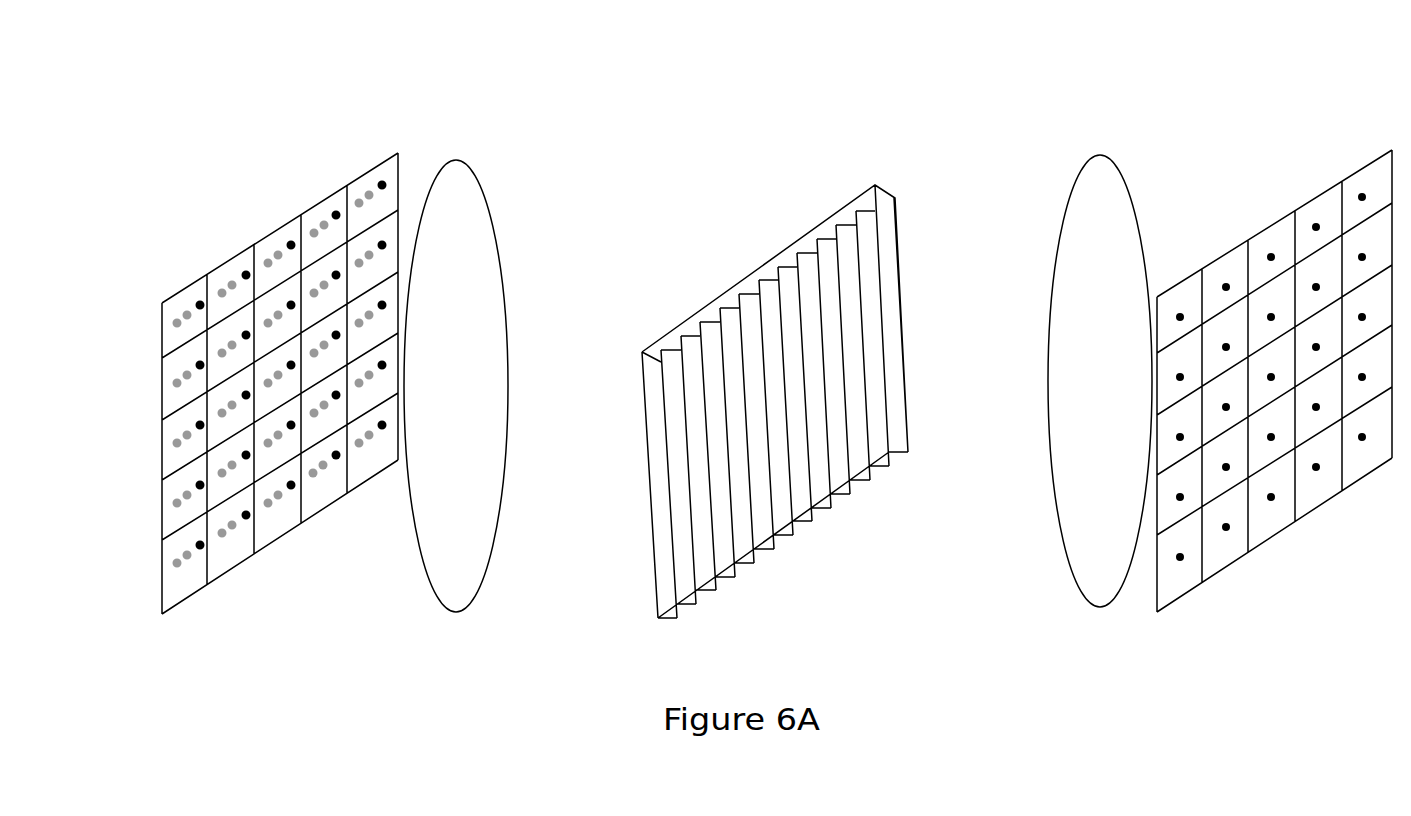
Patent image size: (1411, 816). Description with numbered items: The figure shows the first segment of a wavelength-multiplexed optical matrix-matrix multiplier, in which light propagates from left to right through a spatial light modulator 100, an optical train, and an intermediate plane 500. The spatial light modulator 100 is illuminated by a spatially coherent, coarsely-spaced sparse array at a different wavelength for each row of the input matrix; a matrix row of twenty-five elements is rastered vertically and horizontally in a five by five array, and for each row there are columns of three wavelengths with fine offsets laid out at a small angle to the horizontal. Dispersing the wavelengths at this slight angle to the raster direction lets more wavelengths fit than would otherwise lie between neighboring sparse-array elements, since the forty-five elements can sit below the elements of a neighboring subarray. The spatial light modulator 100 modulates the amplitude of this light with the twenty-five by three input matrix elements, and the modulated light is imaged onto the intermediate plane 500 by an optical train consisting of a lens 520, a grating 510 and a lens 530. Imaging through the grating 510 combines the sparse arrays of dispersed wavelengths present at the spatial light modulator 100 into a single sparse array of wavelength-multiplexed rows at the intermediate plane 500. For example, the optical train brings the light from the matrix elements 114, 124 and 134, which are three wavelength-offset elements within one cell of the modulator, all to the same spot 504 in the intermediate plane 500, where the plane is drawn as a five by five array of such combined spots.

The spatial light modulator 100 is at (338, 180).
The matrix element 114 is at (334, 464).
The matrix element 124 is at (330, 472).
The matrix element 134 is at (314, 478).
The lens 520 is at (457, 162).
The grating 510 is at (826, 222).
The lens 530 is at (1093, 157).
The intermediate plane 500 is at (1333, 185).
The spot 504 is at (1224, 284).